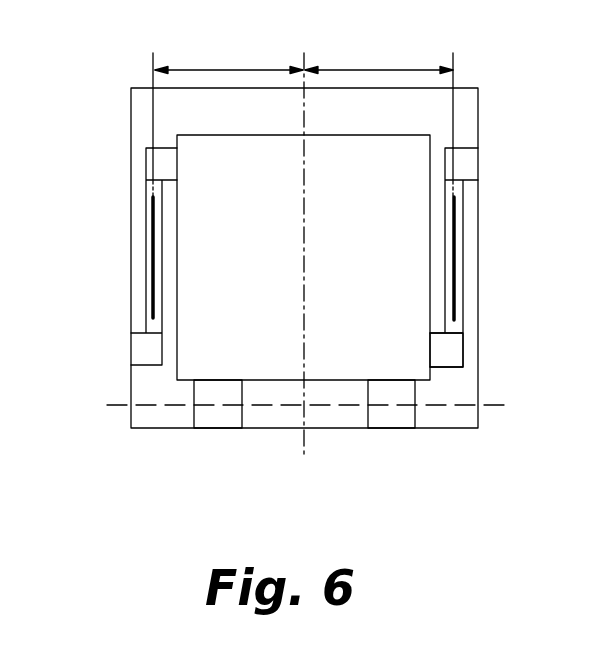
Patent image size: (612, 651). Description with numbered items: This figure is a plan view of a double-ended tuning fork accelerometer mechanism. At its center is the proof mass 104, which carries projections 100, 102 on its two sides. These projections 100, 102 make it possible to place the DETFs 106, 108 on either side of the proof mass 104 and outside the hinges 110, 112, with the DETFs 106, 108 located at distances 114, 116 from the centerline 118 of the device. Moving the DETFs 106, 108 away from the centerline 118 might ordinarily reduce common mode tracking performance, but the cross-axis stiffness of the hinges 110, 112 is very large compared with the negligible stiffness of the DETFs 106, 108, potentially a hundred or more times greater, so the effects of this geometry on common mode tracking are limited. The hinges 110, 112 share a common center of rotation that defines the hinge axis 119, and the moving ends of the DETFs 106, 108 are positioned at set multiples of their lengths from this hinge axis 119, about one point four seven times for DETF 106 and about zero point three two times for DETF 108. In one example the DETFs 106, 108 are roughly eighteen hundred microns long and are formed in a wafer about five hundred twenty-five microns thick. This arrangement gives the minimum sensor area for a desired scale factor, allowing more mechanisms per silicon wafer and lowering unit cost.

The projection 100 is at (167, 148).
The projection 102 is at (446, 367).
The proof mass 104 is at (197, 338).
The DETF 106 is at (147, 273).
The DETF 108 is at (462, 273).
The hinge 110 is at (193, 413).
The hinge 112 is at (415, 413).
The distance 114 is at (217, 70).
The distance 116 is at (391, 70).
The centerline 118 is at (297, 447).
The hinge axis 119 is at (105, 405).